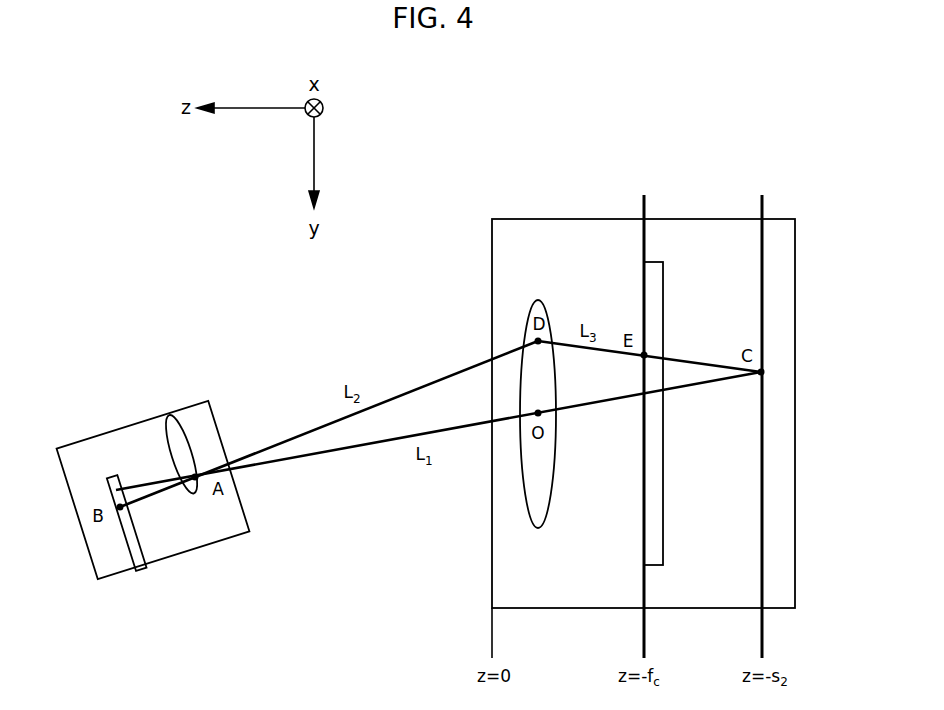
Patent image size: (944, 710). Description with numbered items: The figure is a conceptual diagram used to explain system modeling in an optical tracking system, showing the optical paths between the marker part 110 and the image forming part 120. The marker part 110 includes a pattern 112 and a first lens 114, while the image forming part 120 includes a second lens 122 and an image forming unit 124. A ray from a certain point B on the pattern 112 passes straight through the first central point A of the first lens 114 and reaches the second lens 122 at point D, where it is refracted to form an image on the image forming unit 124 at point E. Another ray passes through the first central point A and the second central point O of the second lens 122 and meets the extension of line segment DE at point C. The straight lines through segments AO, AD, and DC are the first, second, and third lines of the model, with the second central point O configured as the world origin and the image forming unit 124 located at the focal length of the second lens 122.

The marker part 110 is at (73, 305).
The pattern 112 is at (97, 453).
The first lens 114 is at (192, 440).
The image forming part 120 is at (537, 127).
The second lens 122 is at (545, 300).
The image forming unit 124 is at (663, 290).